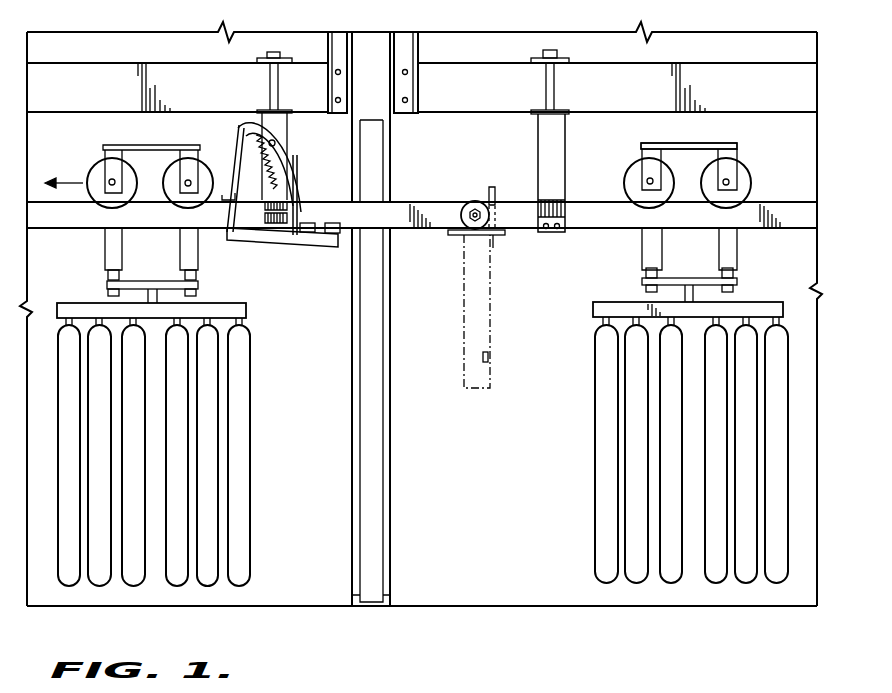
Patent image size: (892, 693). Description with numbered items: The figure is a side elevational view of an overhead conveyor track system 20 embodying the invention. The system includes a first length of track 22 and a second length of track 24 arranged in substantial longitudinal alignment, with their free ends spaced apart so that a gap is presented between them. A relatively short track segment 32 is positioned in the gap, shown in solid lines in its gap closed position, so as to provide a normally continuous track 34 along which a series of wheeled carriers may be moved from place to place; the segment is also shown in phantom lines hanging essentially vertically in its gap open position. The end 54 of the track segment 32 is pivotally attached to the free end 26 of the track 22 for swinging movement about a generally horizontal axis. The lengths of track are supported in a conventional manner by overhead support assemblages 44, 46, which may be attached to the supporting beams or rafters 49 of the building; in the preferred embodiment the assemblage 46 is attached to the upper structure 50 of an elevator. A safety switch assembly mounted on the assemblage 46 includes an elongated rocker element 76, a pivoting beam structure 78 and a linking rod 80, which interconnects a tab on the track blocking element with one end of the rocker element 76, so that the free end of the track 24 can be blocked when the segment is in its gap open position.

The overhead conveyor track system 20 is at (534, 27).
The first length of track 22 is at (595, 207).
The second length of track 24 is at (51, 222).
The free end of track 22 26 is at (474, 205).
The track segment 32 is at (405, 207).
The continuous track 34 is at (387, 220).
The overhead support assemblage 44 is at (555, 138).
The overhead support assemblage 46 is at (283, 135).
The supporting beams or rafters 49 is at (744, 66).
The upper structure of elevator 50 is at (81, 70).
The end of track segment 54 is at (449, 205).
The rocker element 76 is at (293, 157).
The pivoting beam structure 78 is at (264, 240).
The linking rod 80 is at (298, 195).